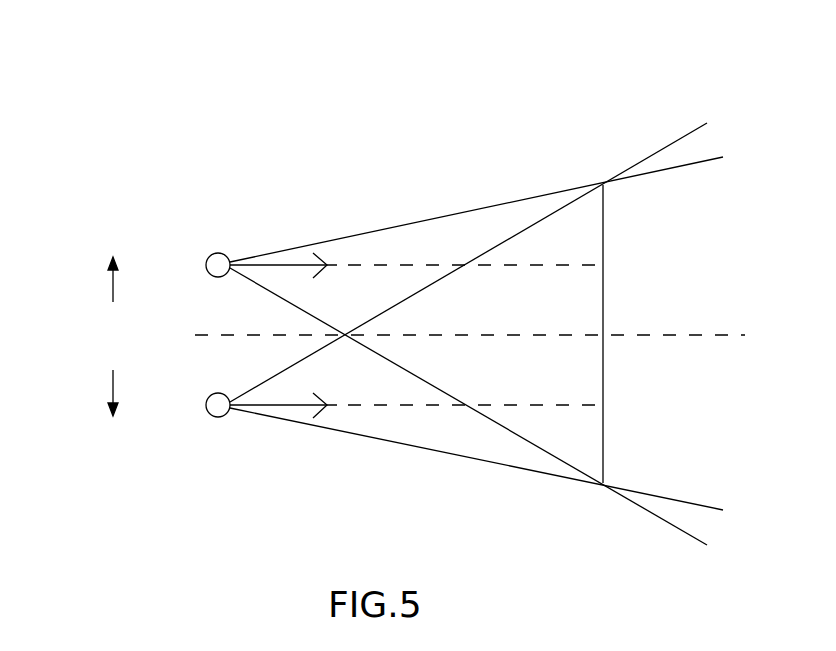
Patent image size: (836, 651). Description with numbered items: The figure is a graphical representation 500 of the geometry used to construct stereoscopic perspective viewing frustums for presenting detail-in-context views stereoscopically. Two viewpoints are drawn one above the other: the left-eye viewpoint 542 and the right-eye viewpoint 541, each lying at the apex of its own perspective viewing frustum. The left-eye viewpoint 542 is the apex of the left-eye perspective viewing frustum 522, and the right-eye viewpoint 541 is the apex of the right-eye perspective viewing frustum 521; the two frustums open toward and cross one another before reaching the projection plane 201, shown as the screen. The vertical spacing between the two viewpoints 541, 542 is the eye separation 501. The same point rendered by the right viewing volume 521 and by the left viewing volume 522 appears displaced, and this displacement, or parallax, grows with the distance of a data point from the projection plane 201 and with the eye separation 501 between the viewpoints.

The graphical representation 500 is at (383, 58).
The eye separation distance 501 is at (95, 373).
The projection plane 201 is at (603, 253).
The right-eye perspective viewing frustum 521 is at (445, 418).
The left-eye perspective viewing frustum 522 is at (420, 252).
The right-eye viewpoint 541 is at (205, 462).
The left-eye viewpoint 542 is at (202, 217).